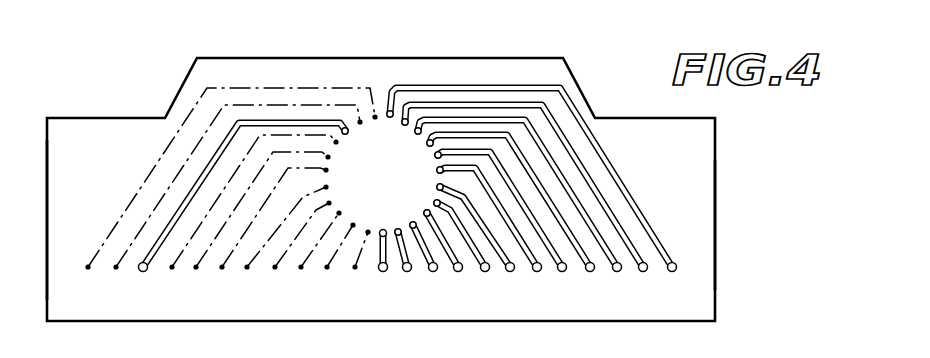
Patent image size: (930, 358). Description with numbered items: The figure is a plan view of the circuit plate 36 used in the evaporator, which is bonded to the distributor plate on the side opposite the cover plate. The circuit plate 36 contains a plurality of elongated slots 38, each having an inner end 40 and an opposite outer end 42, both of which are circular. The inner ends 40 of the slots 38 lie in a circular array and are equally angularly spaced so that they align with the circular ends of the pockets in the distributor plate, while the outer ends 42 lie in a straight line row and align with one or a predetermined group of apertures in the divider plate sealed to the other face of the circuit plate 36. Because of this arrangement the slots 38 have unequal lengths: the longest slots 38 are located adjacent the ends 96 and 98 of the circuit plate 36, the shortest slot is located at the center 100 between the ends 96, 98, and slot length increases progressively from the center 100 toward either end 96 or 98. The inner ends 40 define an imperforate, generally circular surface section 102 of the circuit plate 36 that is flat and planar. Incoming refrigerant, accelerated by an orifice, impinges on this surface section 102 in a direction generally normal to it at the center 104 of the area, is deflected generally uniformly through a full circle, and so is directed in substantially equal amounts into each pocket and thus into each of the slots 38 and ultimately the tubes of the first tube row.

The circuit plate 36 is at (676, 128).
The elongated slots 38 is at (563, 143).
The inner ends of the slots 40 is at (383, 232).
The outer ends of the slots 42 is at (410, 272).
The end of the circuit plate 96 is at (717, 213).
The end of the circuit plate 98 is at (47, 173).
The center of the plate 100 is at (383, 280).
The imperforate circular surface section 102 is at (402, 157).
The center of the impingement area 104 is at (382, 175).